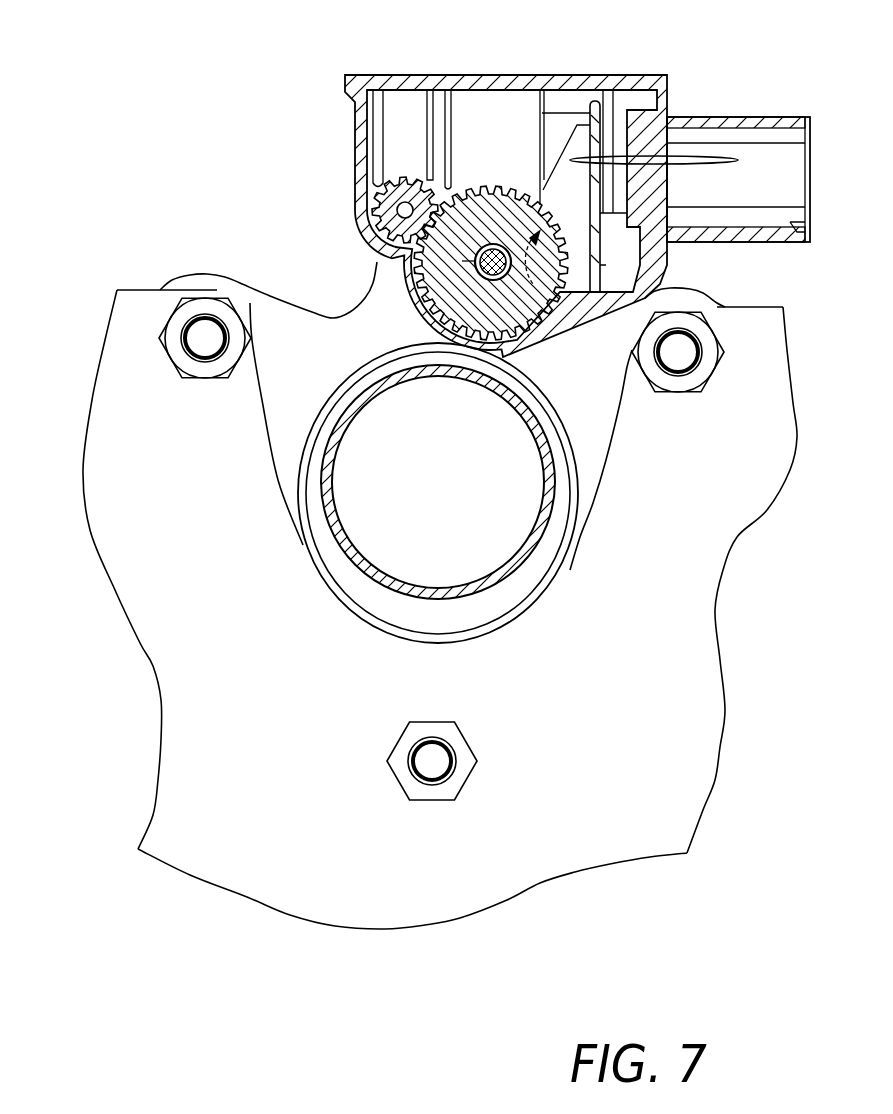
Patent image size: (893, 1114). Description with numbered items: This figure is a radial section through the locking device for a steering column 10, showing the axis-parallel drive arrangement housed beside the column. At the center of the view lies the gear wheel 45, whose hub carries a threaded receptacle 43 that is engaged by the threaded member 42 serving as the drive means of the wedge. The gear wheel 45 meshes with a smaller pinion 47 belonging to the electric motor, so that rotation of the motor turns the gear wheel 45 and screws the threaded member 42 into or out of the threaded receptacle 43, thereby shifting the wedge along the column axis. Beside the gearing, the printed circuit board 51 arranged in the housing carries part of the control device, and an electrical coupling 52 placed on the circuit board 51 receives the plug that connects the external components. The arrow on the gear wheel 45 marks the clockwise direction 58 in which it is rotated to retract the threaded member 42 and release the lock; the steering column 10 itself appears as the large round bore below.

The steering column 10 is at (457, 381).
The threaded member 42 is at (497, 203).
The threaded receptacle 43 is at (485, 244).
The gear wheel 45 is at (492, 248).
The pinion 47 is at (372, 210).
The printed circuit board 51 is at (597, 102).
The electrical coupling 52 is at (748, 120).
The clockwise direction 58 is at (548, 275).